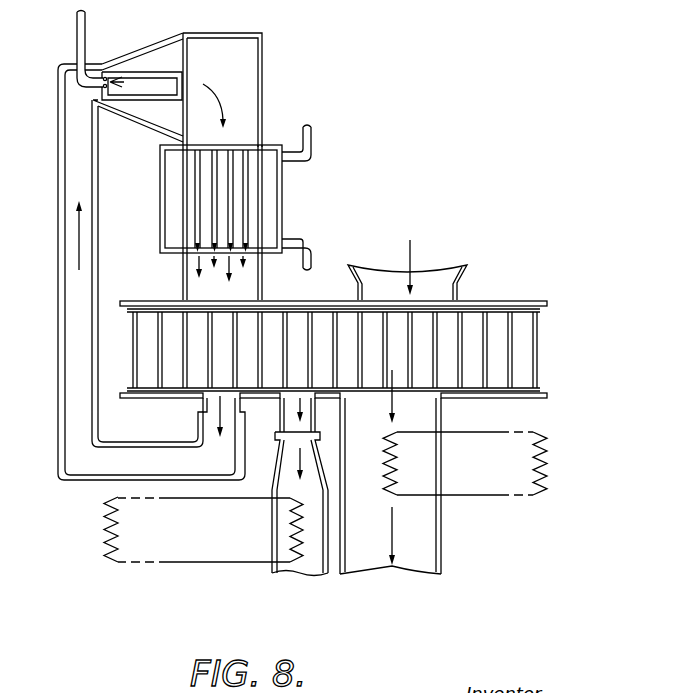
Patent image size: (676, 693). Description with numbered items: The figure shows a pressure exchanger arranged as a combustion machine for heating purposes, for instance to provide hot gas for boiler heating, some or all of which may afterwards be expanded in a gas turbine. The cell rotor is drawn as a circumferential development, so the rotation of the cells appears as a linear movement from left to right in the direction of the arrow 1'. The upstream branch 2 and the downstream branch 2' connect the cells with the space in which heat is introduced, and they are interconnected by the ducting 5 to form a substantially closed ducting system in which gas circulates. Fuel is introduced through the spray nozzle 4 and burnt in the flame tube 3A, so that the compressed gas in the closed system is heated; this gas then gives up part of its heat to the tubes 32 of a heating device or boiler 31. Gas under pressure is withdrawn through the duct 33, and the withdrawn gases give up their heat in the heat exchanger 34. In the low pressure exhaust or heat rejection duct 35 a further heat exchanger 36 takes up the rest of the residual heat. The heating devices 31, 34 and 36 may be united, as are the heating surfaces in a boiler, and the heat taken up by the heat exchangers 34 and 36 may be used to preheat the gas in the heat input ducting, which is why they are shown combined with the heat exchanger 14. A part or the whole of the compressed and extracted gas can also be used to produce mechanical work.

The direction of cell movement arrow 1' is at (333, 349).
The upstream branch duct 2 is at (206, 276).
The downstream branch duct 2' is at (157, 273).
The flame tube 3A is at (138, 102).
The spray nozzle 4 is at (100, 66).
The ducting 5 is at (70, 172).
The heat exchanger 14 is at (102, 517).
The heating device 31 is at (267, 172).
The tubes of heating device or boiler 32 is at (230, 193).
The withdrawal duct 33 is at (284, 421).
The heat exchanger 34 is at (225, 498).
The low pressure exhaust duct 35 is at (428, 412).
The heat exchanger 36 is at (458, 433).